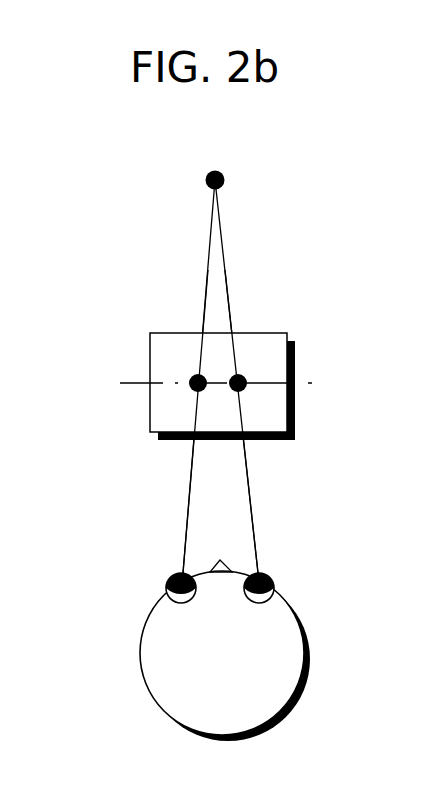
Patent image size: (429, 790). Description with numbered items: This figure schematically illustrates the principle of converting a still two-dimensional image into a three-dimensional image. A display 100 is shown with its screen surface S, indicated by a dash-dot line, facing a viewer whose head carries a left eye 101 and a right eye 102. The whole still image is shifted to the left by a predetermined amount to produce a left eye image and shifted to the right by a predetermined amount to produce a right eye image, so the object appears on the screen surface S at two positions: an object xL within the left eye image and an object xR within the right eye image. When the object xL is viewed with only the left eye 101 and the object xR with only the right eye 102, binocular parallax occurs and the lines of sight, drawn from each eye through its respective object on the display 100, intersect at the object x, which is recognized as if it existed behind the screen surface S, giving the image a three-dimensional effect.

The object x is at (223, 173).
The display 100 is at (262, 331).
The screen surface S is at (199, 387).
The object within the left eye image xL is at (193, 391).
The object within the right eye image xR is at (242, 391).
The left eye 101 is at (168, 578).
The right eye 102 is at (272, 578).